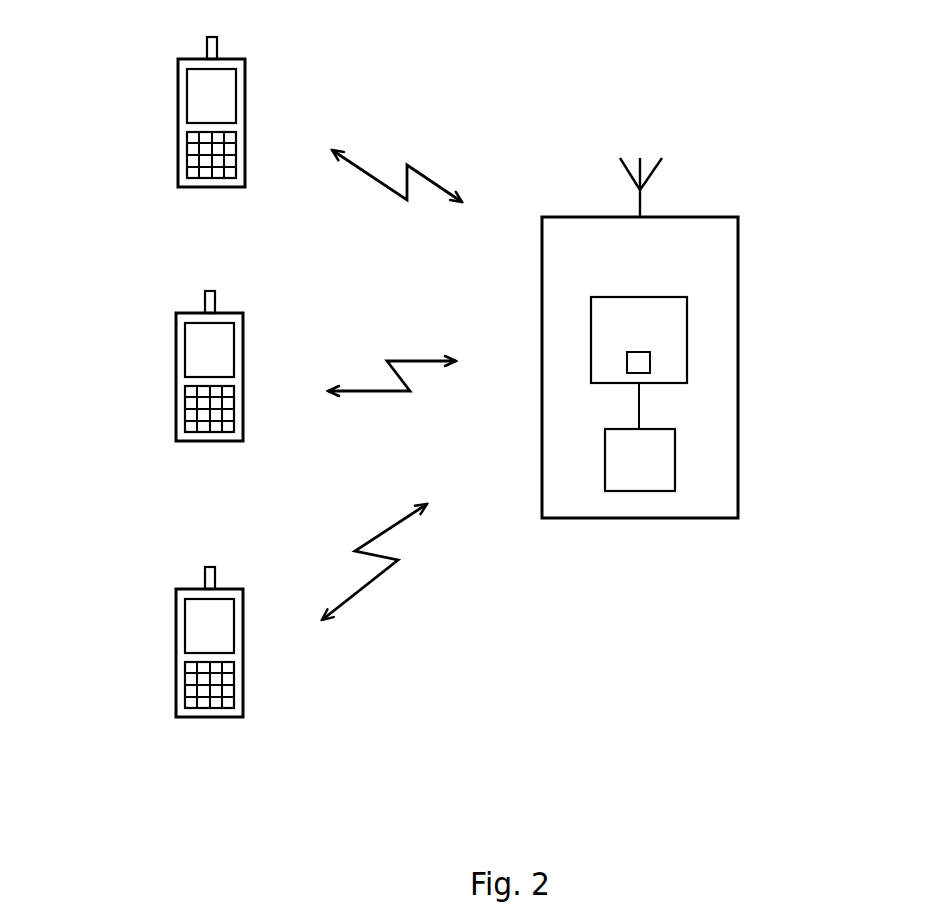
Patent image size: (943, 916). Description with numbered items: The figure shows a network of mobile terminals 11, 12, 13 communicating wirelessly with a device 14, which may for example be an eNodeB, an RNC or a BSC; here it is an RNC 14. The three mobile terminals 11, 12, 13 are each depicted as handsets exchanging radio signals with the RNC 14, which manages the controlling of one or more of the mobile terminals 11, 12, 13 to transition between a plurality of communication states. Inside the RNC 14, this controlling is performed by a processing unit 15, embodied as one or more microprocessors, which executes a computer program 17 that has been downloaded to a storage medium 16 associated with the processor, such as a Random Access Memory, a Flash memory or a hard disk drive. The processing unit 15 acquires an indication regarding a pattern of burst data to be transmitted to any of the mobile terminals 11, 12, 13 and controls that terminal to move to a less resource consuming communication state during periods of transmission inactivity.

The mobile terminal 11 is at (162, 62).
The mobile terminal 12 is at (160, 318).
The mobile terminal 13 is at (160, 595).
The RNC 14 is at (703, 217).
The processing unit 15 is at (623, 459).
The storage medium 16 is at (668, 323).
The computer program 17 is at (638, 365).